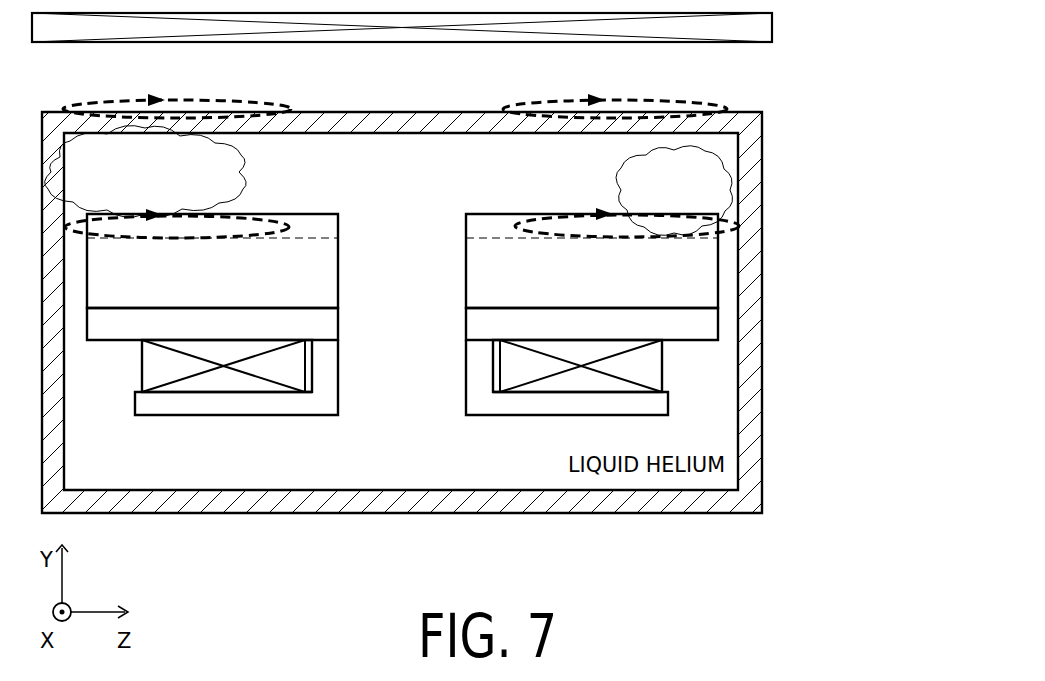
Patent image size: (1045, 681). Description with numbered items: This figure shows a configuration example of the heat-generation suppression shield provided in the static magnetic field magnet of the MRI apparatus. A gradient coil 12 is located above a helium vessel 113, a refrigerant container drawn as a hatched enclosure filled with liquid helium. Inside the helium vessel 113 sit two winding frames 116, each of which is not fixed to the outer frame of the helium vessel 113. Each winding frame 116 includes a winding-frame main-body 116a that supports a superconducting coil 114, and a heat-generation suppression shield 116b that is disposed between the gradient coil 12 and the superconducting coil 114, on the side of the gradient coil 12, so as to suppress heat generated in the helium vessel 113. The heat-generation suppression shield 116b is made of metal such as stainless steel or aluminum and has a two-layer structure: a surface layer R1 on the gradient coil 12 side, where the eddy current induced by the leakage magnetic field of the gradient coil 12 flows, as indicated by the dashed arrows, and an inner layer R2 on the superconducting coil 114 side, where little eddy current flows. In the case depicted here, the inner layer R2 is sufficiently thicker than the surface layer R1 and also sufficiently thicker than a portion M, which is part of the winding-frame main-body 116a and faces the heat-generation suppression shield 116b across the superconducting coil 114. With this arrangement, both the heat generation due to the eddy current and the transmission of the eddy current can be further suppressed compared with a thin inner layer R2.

The gradient coil 12 is at (772, 27).
The helium vessel 113 is at (762, 158).
The superconducting coil 114 is at (663, 365).
The winding frame 116 is at (506, 274).
The winding-frame main-body 116a is at (705, 325).
The heat-generation suppression shield 116b is at (476, 258).
The surface layer R1 is at (740, 226).
The inner layer R2 is at (705, 272).
The portion M is at (658, 402).